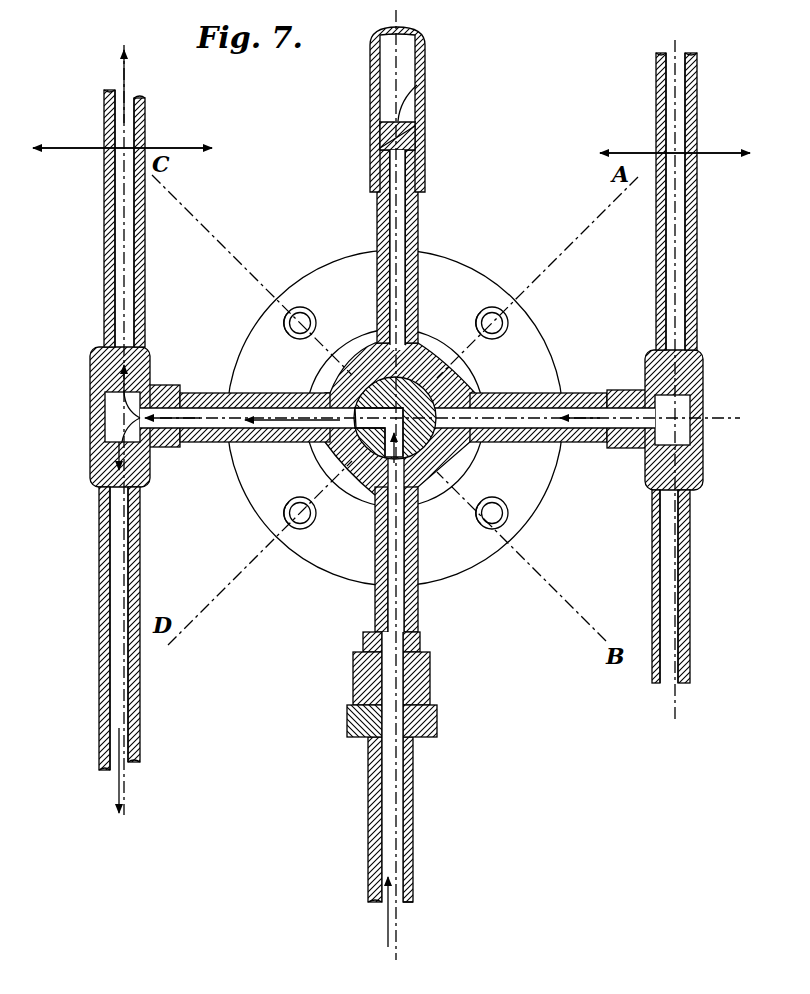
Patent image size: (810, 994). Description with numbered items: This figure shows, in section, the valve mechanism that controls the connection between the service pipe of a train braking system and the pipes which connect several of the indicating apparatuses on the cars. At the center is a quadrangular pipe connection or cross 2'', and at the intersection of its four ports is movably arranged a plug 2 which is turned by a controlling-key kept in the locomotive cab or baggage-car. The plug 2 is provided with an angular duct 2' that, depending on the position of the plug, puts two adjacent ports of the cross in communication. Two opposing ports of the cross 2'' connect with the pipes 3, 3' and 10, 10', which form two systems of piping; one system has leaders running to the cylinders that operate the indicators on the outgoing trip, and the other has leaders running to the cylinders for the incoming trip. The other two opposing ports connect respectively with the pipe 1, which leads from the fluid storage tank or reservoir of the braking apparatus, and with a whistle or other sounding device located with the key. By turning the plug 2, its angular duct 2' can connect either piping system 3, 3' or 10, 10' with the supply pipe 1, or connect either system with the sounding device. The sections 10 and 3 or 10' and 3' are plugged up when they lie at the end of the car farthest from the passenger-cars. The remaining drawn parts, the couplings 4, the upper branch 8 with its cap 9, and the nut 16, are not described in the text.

The pipe 1 is at (393, 790).
The plug 2 is at (430, 412).
The angular duct 2' is at (364, 469).
The quadrangular pipe connection or cross 2'' is at (395, 418).
The pipe 3 is at (124, 218).
The pipe 3' is at (136, 628).
The T-coupling 4 is at (152, 380).
The upper pipe 8 is at (418, 195).
The cap 9 is at (397, 109).
The pipe 10 is at (695, 201).
The pipe 10' is at (694, 586).
The coupling nut 16 is at (430, 687).